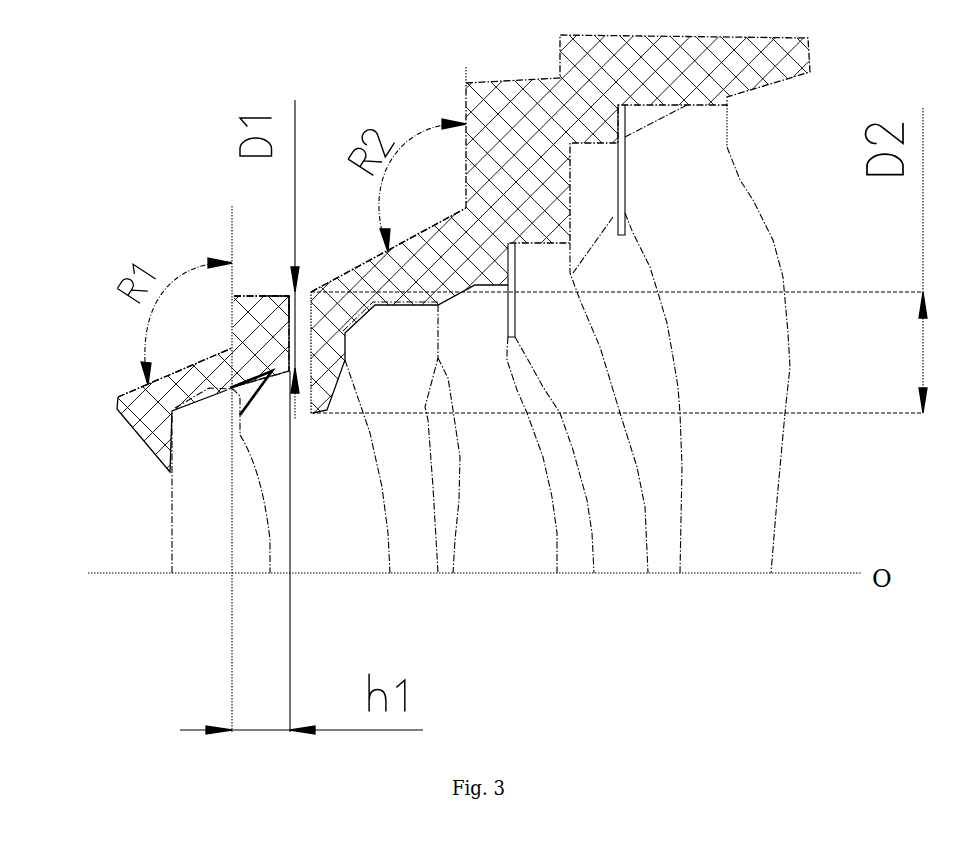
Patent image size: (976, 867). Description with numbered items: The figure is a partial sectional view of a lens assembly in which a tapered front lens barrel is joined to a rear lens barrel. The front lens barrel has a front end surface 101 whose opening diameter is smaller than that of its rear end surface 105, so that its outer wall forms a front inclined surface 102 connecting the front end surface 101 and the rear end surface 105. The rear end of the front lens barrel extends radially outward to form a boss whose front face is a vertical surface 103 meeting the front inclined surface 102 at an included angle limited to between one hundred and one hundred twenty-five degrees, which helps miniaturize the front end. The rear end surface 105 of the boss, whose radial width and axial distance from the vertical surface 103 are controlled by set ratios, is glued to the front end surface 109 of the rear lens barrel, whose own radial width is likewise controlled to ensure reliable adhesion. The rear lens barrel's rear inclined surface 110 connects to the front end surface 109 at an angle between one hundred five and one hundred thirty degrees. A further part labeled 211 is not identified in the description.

The front end surface 101 is at (117, 405).
The front inclined surface 102 is at (133, 389).
The vertical surface 103 is at (233, 312).
The rear end surface 105 is at (278, 291).
The front end surface 109 is at (312, 290).
The rear inclined surface 110 is at (387, 252).
The housing portion 211 is at (465, 103).